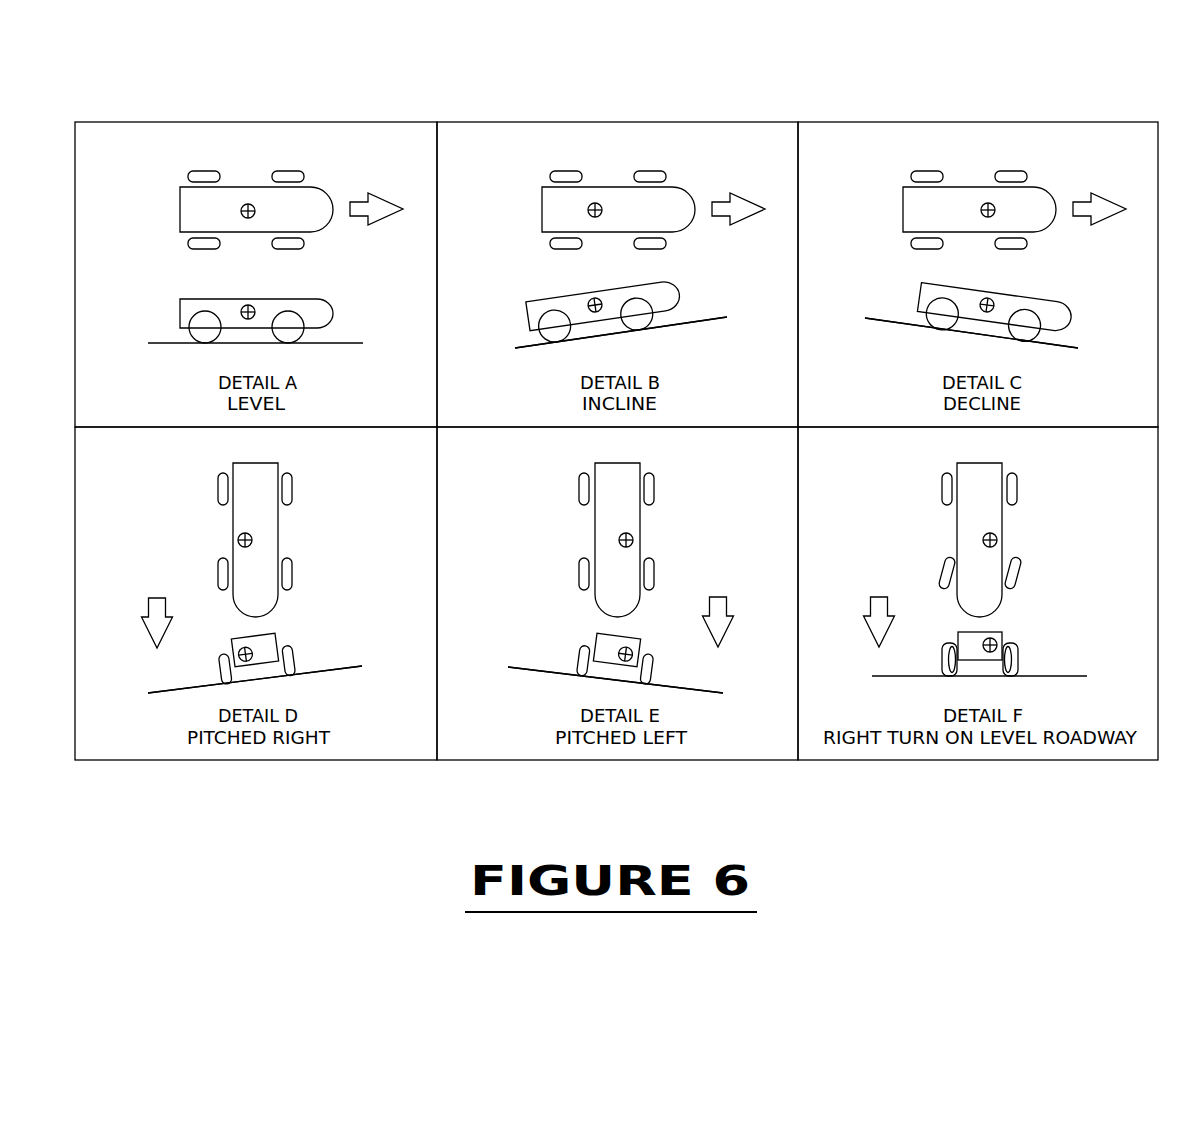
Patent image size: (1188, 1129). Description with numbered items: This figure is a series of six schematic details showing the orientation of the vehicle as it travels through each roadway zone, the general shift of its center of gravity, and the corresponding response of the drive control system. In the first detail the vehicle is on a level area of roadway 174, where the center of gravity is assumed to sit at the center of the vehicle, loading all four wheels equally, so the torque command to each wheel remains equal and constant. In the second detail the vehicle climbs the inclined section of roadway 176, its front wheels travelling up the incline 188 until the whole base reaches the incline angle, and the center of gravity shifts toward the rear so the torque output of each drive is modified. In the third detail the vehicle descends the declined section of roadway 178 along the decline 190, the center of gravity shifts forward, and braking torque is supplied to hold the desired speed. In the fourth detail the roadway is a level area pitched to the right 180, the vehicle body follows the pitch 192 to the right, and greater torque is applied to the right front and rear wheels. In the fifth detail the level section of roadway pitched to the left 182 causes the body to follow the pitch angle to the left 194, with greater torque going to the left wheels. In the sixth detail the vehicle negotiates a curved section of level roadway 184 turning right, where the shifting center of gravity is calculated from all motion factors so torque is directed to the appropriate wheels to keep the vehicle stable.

The level area of roadway 174 is at (375, 148).
The inclined section of roadway 176 is at (738, 148).
The declined section of roadway 178 is at (1100, 148).
The level area pitched to the right 180 is at (377, 742).
The level section of roadway pitched to the left 182 is at (502, 742).
The curved section of level roadway 184 is at (952, 748).
The incline 188 is at (713, 322).
The decline 190 is at (888, 319).
The pitch to the right 192 is at (348, 667).
The pitch angle to the left 194 is at (540, 670).